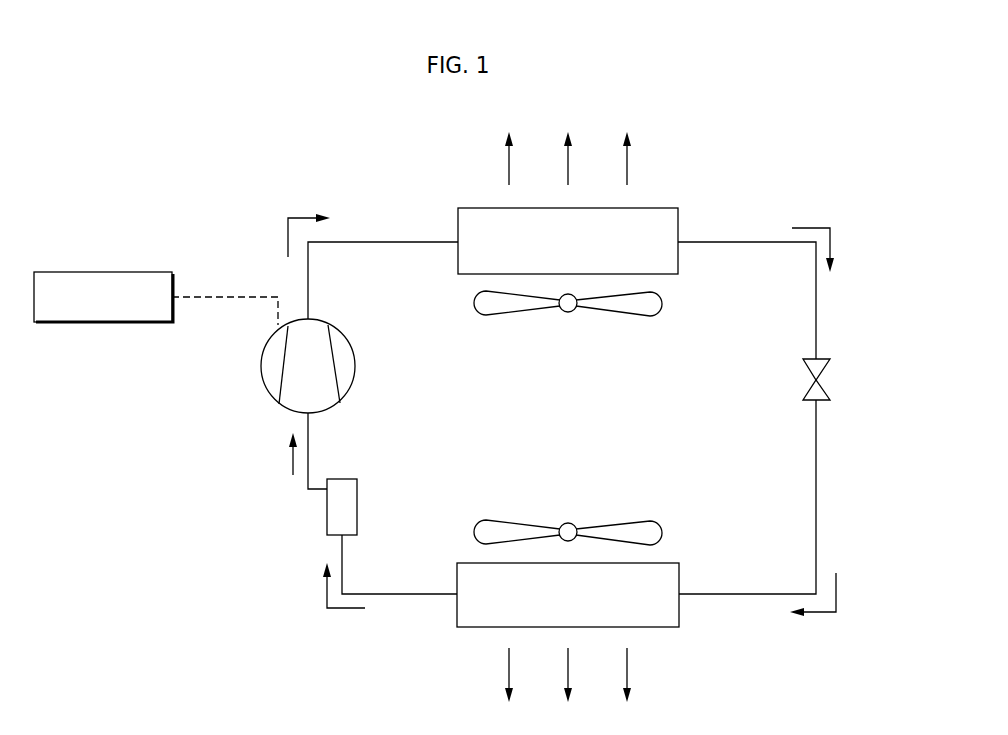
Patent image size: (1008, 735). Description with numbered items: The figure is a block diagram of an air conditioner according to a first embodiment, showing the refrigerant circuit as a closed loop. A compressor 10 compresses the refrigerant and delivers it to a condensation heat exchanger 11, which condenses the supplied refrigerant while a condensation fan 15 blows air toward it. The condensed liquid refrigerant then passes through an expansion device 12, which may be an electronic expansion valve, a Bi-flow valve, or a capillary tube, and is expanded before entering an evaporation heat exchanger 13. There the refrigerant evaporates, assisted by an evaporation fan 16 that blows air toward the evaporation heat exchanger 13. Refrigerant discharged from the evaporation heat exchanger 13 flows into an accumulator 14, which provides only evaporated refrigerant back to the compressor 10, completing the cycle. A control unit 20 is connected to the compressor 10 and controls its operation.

The compressor 10 is at (267, 393).
The condensation heat exchanger 11 is at (652, 208).
The expansion device 12 is at (822, 382).
The evaporation heat exchanger 13 is at (660, 627).
The accumulator 14 is at (327, 507).
The condensation fan 15 is at (660, 313).
The evaporation fan 16 is at (642, 518).
The control unit 20 is at (142, 270).